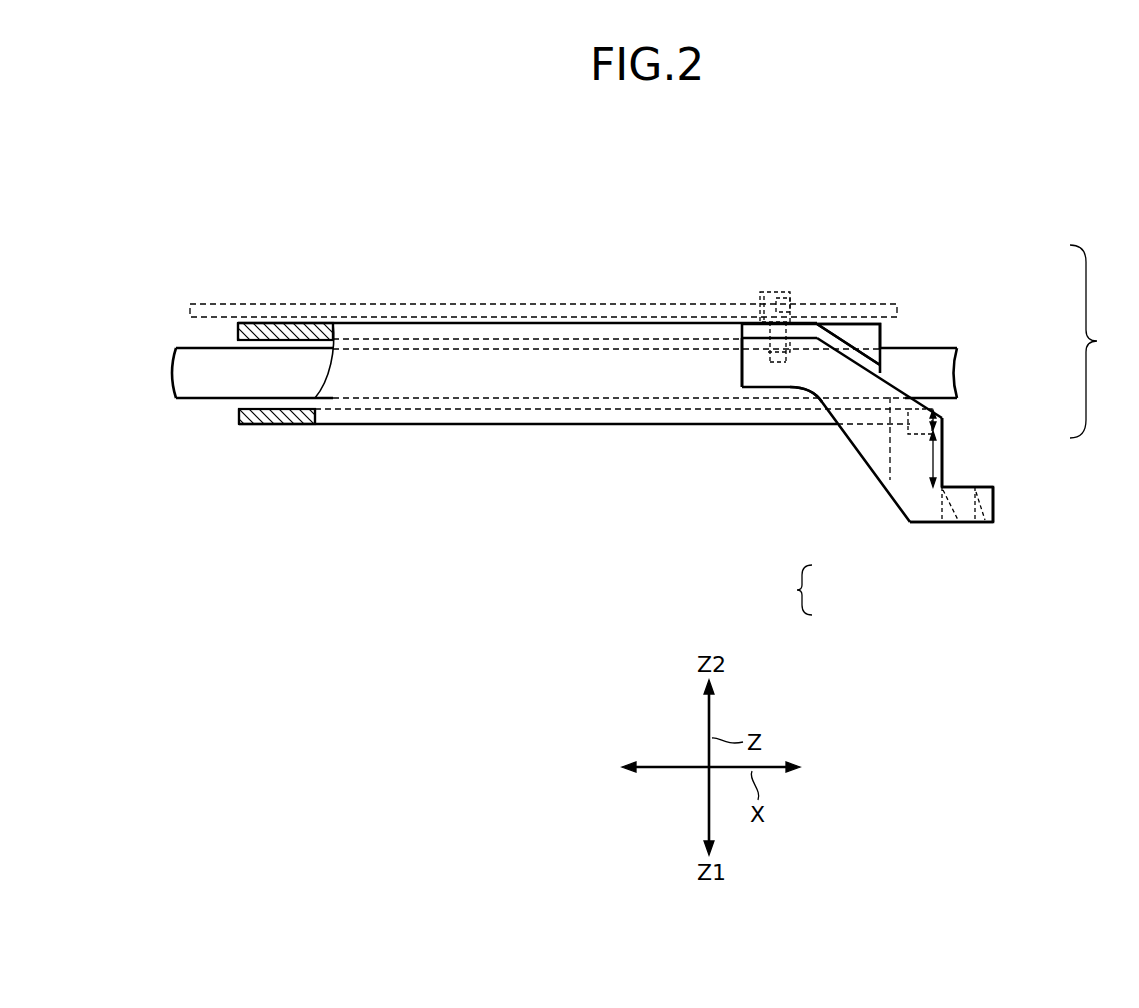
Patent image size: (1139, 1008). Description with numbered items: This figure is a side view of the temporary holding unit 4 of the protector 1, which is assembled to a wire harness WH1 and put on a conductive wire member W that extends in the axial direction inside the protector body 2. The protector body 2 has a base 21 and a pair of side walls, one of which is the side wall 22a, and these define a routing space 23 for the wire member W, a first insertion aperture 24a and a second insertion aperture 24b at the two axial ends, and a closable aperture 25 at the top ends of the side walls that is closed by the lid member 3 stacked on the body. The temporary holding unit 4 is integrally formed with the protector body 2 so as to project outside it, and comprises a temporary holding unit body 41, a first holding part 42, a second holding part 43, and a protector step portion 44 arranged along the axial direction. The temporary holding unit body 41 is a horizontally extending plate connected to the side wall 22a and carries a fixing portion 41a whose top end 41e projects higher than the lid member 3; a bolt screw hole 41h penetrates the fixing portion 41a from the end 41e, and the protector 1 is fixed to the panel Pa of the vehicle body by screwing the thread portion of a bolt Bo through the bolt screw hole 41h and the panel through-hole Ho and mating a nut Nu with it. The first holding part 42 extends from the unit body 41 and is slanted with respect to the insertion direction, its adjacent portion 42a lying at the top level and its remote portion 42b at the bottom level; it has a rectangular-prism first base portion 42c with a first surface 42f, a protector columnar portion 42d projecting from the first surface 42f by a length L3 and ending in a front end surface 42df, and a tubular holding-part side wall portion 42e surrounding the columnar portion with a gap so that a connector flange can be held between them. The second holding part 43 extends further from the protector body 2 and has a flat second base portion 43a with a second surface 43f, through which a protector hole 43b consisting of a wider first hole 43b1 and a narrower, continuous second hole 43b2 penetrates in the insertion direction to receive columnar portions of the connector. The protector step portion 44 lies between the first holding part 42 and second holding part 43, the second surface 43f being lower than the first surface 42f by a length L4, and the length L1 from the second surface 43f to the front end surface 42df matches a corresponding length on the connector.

The protector 1 is at (239, 331).
The wire harness WH1 is at (261, 266).
The wire member W is at (193, 398).
The protector body 2 is at (290, 445).
The base 21 is at (400, 425).
The side wall 22a is at (357, 383).
The routing space 23 is at (377, 372).
The first insertion aperture 24a is at (246, 401).
The second insertion aperture 24b is at (882, 329).
The closable aperture 25 is at (291, 330).
The lid member 3 is at (418, 323).
The panel Pa is at (315, 305).
The temporary holding unit 4 is at (891, 430).
The temporary holding unit body 41 is at (887, 339).
The fixing portion 41a is at (742, 333).
The end in the height direction 41e is at (762, 305).
The bolt screw hole 41h is at (833, 324).
The bolt Bo is at (781, 315).
The panel through-hole Ho is at (792, 305).
The nut Nu is at (742, 350).
The first holding part 42 is at (968, 440).
The adjacent portion 42a is at (790, 390).
The remote portion 42b is at (963, 405).
The first base portion 42c is at (910, 521).
The protector columnar portion 42d is at (858, 458).
The front end surface 42df is at (920, 409).
The holding-part side wall portion 42e is at (840, 427).
The first surface 42f is at (880, 485).
The second holding part 43 is at (948, 476).
The second base portion 43a is at (995, 515).
The protector hole 43b is at (975, 668).
The first hole 43b1 is at (942, 524).
The second hole 43b2 is at (975, 524).
The second surface 43f is at (985, 486).
The protector step portion 44 is at (948, 442).
The length from second surface to front end surface L1 is at (787, 590).
The projection length of protector columnar portion L3 is at (930, 428).
The length from second surface to first surface L4 is at (931, 483).